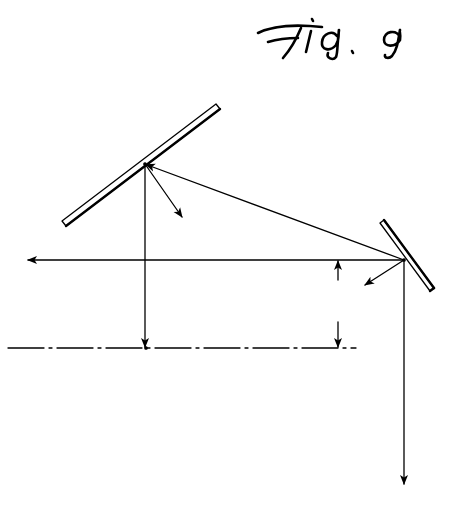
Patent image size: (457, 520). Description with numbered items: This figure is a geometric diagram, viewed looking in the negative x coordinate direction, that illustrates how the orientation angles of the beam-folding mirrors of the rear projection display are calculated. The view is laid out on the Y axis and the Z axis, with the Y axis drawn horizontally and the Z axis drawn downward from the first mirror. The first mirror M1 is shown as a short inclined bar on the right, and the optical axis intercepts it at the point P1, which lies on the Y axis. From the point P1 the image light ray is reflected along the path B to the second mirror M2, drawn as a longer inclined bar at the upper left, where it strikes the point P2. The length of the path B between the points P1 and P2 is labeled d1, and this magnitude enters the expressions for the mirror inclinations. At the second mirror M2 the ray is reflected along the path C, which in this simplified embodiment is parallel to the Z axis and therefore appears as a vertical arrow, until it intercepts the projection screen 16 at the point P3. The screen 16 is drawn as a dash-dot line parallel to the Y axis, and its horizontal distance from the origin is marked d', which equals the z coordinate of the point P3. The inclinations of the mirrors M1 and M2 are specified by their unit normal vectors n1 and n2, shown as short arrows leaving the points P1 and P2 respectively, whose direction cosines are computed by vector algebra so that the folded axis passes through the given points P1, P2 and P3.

The rear projection screen 16 is at (110, 353).
The beam-folding mirror M1 is at (392, 230).
The beam-folding mirror M2 is at (195, 112).
The point on mirror M1 P1 is at (403, 262).
The point on mirror M2 P2 is at (143, 163).
The point on projection screen P3 is at (148, 347).
The path B is at (237, 193).
The path C is at (145, 283).
The unit normal vector n1 is at (380, 279).
The unit normal vector n2 is at (179, 206).
The length of path B d1 is at (316, 222).
The horizontal distance of screen from origin d' is at (331, 304).
The y coordinate axis Y is at (216, 246).
The z coordinate axis Z is at (416, 372).